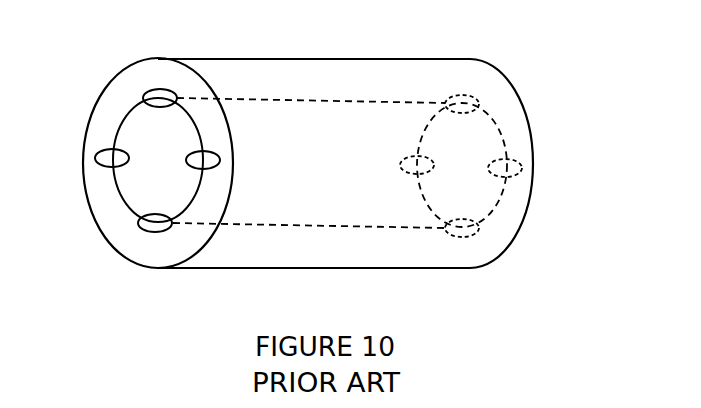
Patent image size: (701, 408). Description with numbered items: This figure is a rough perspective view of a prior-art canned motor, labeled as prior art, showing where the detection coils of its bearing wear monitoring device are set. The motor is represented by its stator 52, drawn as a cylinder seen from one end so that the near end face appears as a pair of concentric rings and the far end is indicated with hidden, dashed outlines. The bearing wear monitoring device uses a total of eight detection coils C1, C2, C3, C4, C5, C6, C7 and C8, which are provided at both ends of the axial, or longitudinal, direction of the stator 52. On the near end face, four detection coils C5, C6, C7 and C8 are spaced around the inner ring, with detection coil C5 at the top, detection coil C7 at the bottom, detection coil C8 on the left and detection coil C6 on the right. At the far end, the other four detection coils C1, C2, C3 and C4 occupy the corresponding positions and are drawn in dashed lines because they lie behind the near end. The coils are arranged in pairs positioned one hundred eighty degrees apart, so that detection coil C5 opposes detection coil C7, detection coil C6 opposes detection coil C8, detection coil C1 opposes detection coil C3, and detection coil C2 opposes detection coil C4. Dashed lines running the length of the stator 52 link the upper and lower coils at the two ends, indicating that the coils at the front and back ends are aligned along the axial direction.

The stator 52 is at (326, 59).
The detection coil C1 is at (462, 95).
The detection coil C2 is at (522, 168).
The detection coil C3 is at (462, 237).
The detection coil C4 is at (400, 165).
The detection coil C5 is at (162, 90).
The detection coil C6 is at (221, 160).
The detection coil C7 is at (156, 233).
The detection coil C8 is at (95, 156).